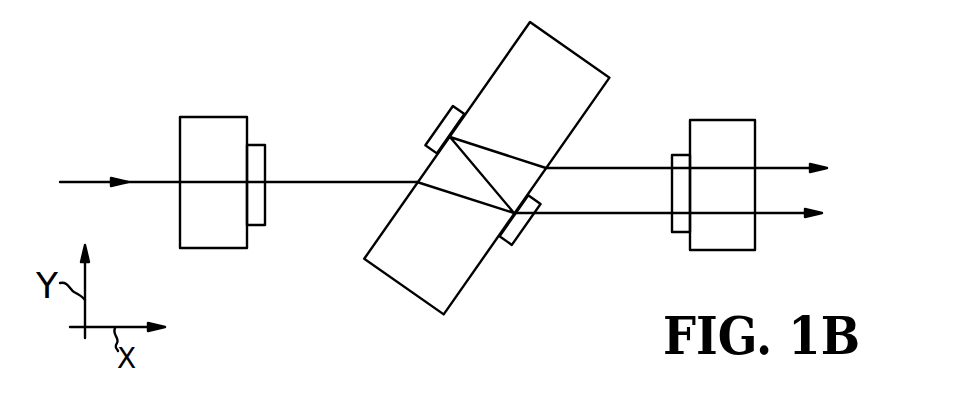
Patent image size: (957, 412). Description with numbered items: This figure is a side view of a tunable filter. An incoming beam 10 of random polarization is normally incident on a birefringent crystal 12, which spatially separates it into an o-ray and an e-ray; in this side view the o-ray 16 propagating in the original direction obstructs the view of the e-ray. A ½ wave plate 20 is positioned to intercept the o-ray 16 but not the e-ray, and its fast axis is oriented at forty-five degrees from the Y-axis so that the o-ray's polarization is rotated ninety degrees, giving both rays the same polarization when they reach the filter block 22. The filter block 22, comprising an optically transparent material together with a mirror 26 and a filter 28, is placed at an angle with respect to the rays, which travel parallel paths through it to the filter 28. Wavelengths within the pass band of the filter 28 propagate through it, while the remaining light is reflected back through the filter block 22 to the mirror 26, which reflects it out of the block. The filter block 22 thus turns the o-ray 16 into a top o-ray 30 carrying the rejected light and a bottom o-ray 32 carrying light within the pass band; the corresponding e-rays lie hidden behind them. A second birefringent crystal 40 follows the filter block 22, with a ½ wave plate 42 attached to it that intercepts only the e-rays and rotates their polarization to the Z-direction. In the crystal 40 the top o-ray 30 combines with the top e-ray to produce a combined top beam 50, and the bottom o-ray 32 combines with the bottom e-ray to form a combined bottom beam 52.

The incoming beam 10 is at (90, 180).
The birefringent crystal 12 is at (210, 117).
The ½ wave plate 20 is at (265, 152).
The o-ray 16 is at (326, 185).
The filter block 22 is at (503, 57).
The mirror 26 is at (440, 117).
The filter 28 is at (520, 228).
The top o-ray 30 is at (596, 167).
The bottom o-ray 32 is at (603, 217).
The ½ wave plate 42 is at (681, 155).
The birefringent crystal 40 is at (738, 119).
The combined top beam 50 is at (788, 166).
The combined bottom beam 52 is at (785, 217).